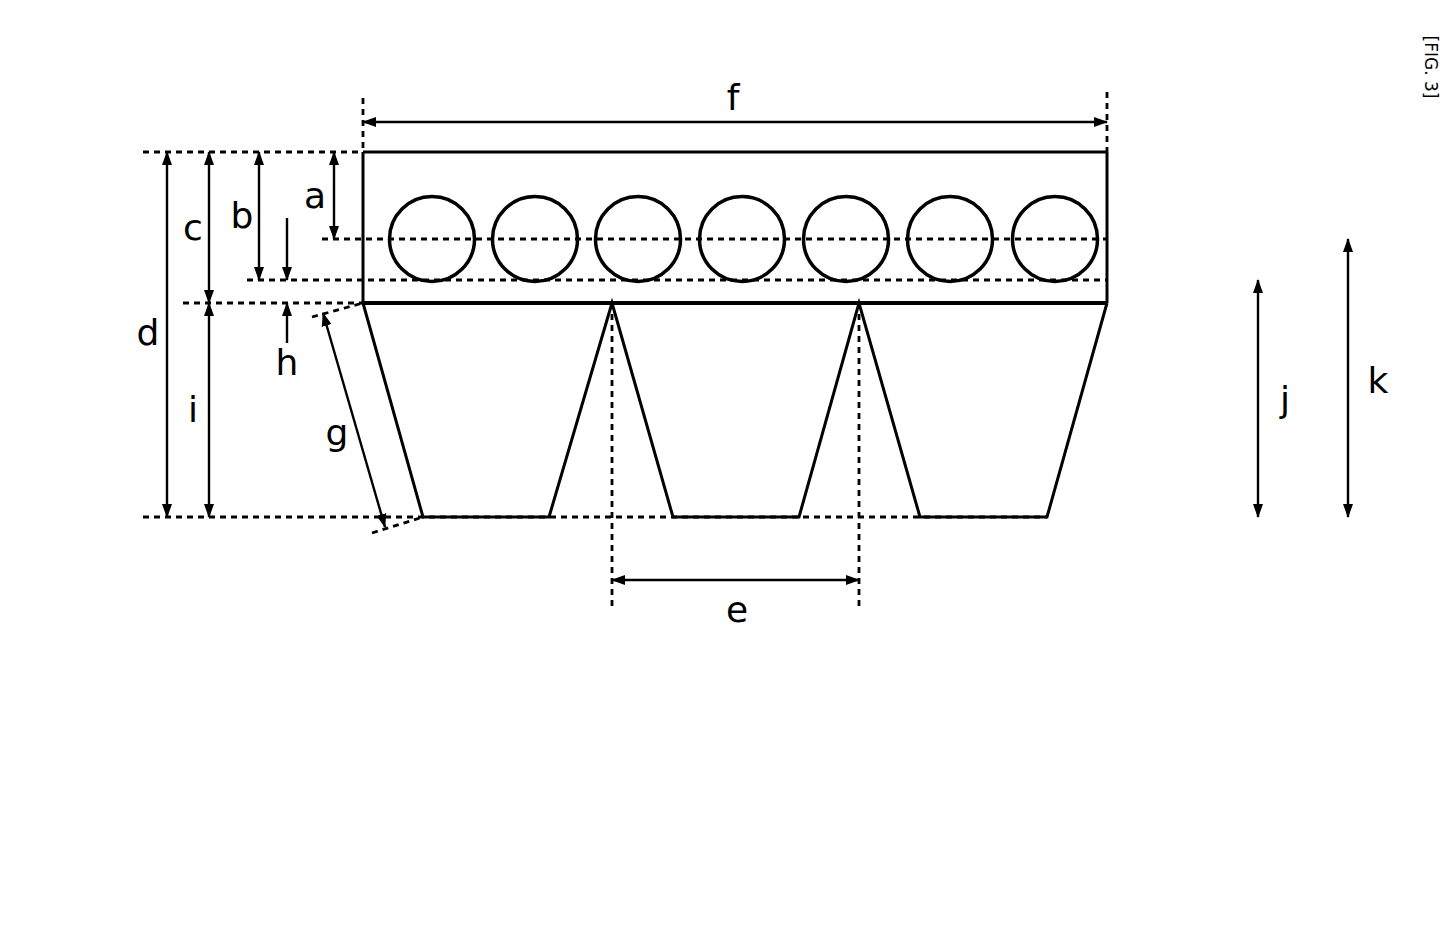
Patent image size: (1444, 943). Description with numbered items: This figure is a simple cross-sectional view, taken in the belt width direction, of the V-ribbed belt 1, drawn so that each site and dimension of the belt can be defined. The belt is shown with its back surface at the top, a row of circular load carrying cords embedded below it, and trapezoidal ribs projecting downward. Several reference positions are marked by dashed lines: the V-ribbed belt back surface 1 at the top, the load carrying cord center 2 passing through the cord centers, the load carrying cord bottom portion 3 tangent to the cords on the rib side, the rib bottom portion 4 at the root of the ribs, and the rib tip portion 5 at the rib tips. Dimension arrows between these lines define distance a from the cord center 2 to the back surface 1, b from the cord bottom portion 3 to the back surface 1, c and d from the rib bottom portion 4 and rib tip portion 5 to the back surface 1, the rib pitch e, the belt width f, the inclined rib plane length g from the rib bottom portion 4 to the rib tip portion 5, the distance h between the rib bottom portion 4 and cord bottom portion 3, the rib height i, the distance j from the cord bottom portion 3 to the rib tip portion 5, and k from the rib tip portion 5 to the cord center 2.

The V-ribbed belt 1 is at (330, 90).
The load carrying cord center 2 is at (1107, 239).
The load carrying cord bottom portion 3 is at (1107, 280).
The rib bottom portion 4 is at (1107, 303).
The rib tip portion 5 is at (1047, 517).